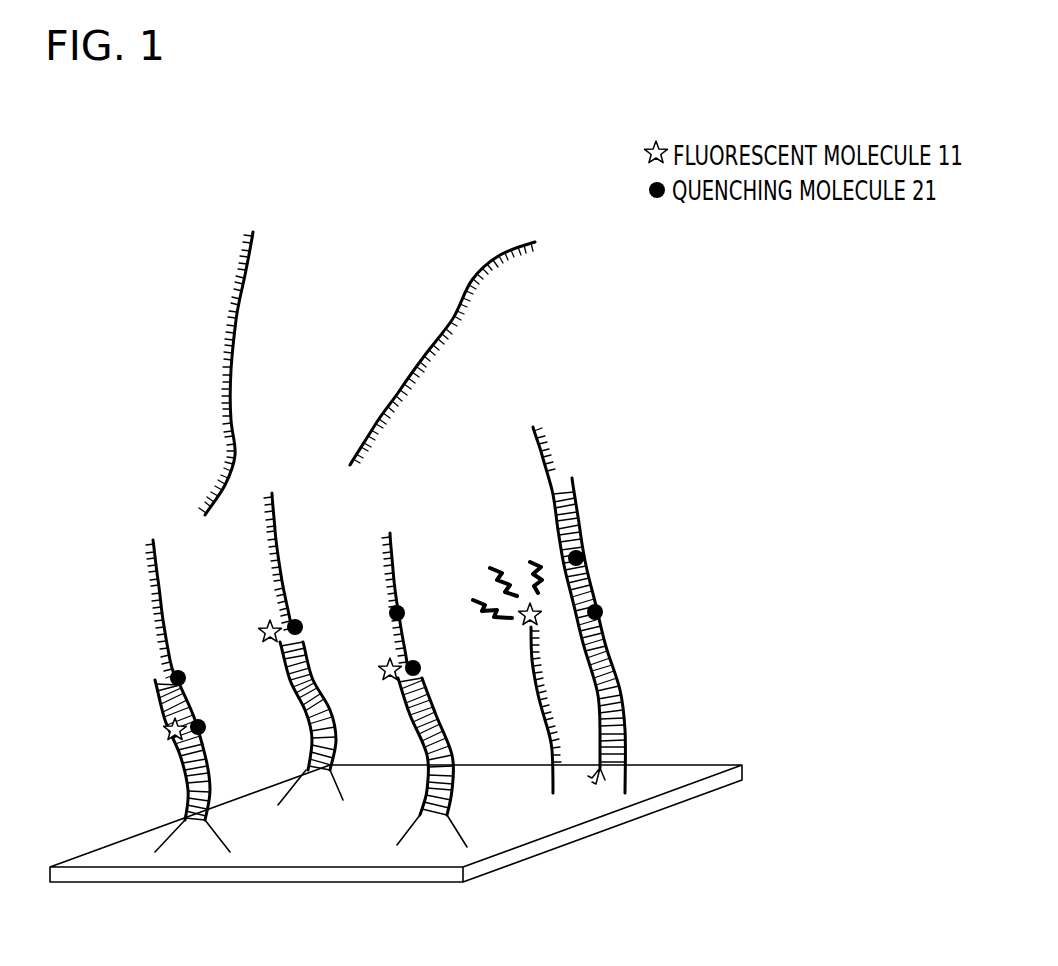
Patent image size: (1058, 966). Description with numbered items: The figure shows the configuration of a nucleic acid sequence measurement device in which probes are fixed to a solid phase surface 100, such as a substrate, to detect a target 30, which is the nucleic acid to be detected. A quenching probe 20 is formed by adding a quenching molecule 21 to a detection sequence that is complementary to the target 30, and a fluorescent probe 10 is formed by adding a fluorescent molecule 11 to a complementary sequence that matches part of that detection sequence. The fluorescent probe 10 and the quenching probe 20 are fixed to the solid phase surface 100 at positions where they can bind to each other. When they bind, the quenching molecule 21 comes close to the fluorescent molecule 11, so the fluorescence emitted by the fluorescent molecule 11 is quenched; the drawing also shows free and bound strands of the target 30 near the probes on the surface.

The fluorescent probe 10 is at (527, 665).
The fluorescent molecule 11 is at (388, 666).
The quenching probe 20 is at (580, 535).
The quenching molecule 21 is at (583, 553).
The target 30 is at (233, 268).
The solid phase surface 100 is at (643, 790).